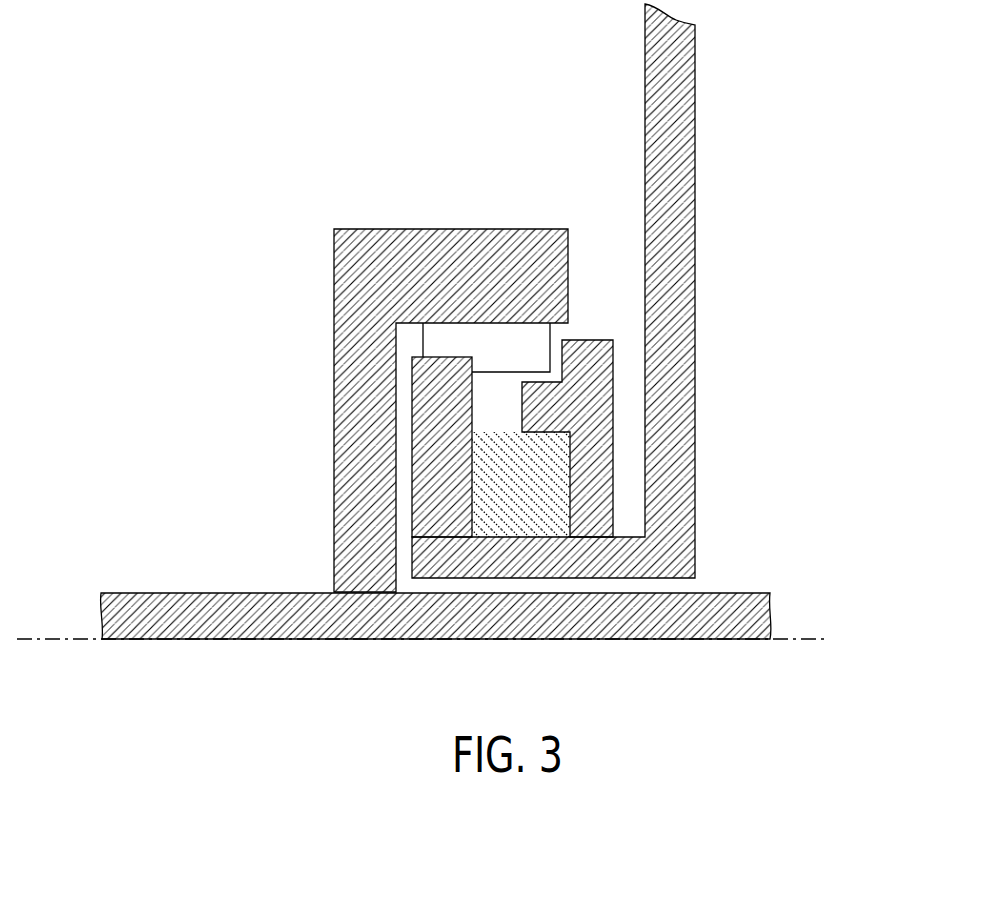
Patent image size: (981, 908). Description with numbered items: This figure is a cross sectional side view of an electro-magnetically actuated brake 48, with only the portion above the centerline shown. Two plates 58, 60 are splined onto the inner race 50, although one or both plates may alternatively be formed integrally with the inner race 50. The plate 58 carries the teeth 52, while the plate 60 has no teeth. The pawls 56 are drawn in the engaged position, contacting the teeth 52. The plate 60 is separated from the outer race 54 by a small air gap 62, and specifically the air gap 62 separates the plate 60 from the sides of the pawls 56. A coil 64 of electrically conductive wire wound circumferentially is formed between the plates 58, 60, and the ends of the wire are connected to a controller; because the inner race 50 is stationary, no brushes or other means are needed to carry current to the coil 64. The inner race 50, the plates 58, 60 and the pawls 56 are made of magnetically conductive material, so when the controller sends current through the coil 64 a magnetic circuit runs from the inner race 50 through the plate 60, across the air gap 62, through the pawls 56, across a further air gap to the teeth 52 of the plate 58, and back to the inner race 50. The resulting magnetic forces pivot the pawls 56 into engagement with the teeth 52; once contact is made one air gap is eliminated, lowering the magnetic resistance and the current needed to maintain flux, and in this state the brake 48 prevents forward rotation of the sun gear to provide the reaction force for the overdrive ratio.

The brake 48 is at (340, 150).
The inner race 50 is at (558, 578).
The teeth 52 is at (412, 372).
The outer race 54 is at (487, 229).
The pawls 56 is at (511, 362).
The plate 58 is at (412, 501).
The plate 60 is at (613, 460).
The air gap 62 is at (553, 372).
The coil 64 is at (507, 537).